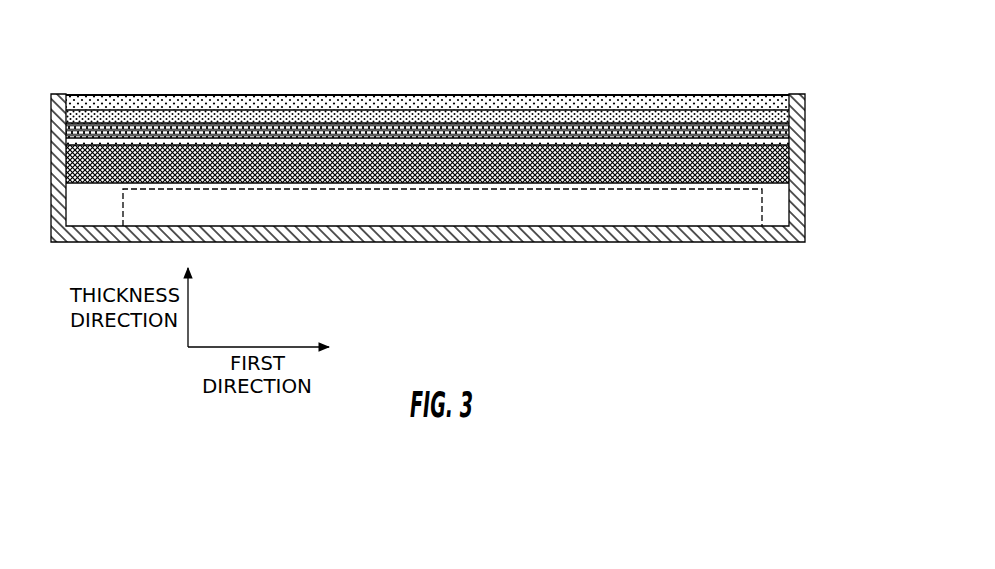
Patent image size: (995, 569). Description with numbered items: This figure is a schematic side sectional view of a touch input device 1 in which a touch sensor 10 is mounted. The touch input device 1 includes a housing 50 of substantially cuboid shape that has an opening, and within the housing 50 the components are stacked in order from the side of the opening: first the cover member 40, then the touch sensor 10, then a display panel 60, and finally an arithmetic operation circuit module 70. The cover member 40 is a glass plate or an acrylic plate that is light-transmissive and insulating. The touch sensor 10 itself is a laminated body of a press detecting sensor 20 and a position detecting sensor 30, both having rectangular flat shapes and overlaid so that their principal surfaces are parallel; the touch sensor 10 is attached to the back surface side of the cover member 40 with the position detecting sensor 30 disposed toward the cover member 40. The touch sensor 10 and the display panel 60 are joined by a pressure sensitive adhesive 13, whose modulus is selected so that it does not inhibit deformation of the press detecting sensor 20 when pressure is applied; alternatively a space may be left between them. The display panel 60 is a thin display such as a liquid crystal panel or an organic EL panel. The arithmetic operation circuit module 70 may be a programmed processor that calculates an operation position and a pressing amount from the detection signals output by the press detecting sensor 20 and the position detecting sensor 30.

The touch input device 1 is at (761, 35).
The touch sensor 10 is at (829, 71).
The pressure sensitive adhesive 13 is at (789, 142).
The press detecting sensor 20 is at (793, 127).
The position detecting sensor 30 is at (781, 112).
The cover member 40 is at (763, 97).
The housing 50 is at (740, 242).
The display panel 60 is at (789, 173).
The arithmetic operation circuit module 70 is at (632, 217).